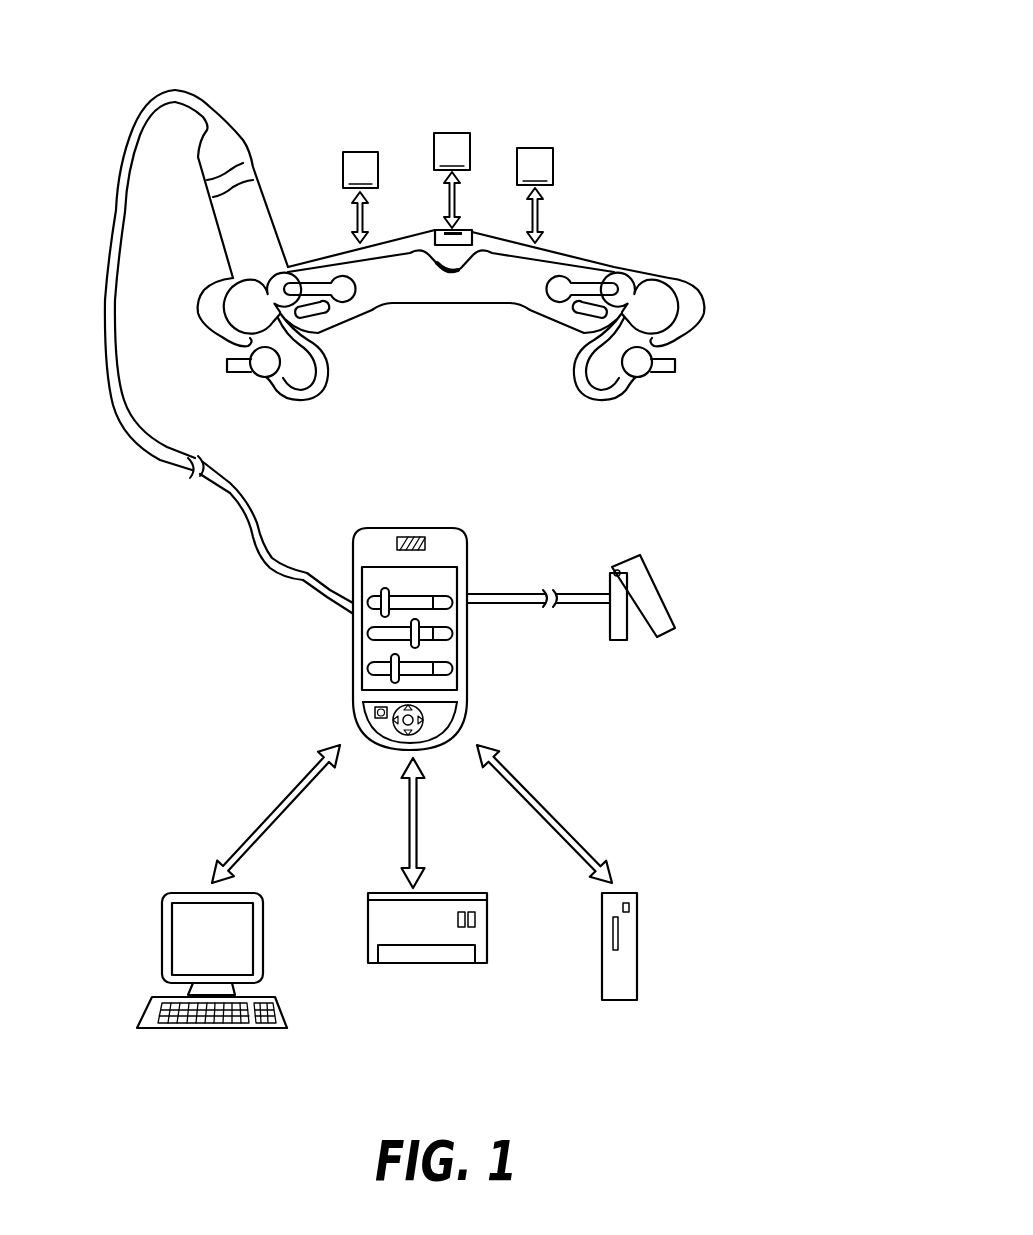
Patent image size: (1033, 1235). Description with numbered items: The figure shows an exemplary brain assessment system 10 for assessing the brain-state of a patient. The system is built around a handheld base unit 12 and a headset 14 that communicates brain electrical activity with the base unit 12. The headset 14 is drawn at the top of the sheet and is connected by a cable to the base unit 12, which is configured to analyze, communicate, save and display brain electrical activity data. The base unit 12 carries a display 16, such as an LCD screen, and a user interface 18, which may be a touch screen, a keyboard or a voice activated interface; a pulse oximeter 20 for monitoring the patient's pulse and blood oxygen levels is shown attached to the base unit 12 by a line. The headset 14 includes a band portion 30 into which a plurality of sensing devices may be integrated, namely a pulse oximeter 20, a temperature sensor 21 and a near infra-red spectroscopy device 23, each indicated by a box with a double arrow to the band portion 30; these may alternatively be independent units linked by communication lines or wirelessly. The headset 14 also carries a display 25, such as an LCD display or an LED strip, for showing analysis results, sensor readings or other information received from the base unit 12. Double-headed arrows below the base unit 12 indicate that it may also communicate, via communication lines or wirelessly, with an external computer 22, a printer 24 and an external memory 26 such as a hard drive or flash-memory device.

The brain assessment system 10 is at (720, 70).
The base unit 12 is at (462, 528).
The headset 14 is at (322, 138).
The display 16 is at (467, 632).
The user interface 18 is at (423, 720).
The pulse oximeter 20 is at (664, 592).
The temperature sensor 21 is at (452, 180).
The near infra-red spectroscopy device 23 is at (535, 195).
The display 25 is at (450, 246).
The band portion 30 is at (586, 256).
The external computer 22 is at (162, 918).
The printer 24 is at (368, 927).
The external memory 26 is at (603, 948).